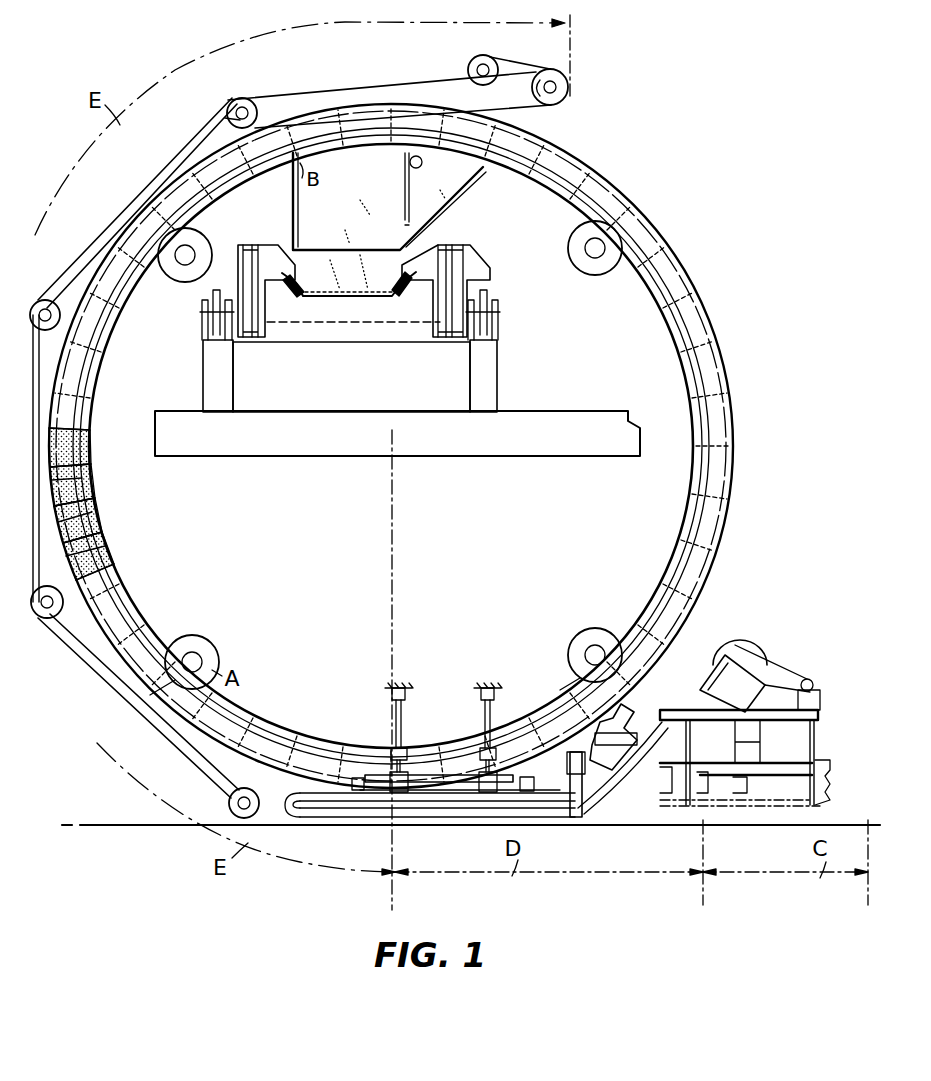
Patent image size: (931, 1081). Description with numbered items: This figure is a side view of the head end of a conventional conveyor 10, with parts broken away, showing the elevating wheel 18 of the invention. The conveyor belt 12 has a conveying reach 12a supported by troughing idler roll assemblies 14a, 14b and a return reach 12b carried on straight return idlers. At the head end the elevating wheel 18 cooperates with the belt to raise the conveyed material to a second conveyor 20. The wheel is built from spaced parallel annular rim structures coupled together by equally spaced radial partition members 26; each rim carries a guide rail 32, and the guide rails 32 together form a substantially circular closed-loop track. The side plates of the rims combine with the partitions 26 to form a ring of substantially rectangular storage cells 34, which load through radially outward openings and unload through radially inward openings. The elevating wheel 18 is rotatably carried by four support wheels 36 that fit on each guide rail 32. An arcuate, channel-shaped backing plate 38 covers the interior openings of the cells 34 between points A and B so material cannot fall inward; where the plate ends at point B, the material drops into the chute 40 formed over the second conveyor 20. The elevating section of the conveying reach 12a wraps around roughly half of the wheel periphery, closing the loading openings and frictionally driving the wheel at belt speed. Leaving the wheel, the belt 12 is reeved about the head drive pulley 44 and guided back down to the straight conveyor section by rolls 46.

The conveyor 10 is at (830, 752).
The conveyor belt 12 is at (780, 797).
The conveying reach 12a is at (770, 775).
The return reach 12b is at (115, 702).
The troughing idler roll assembly 14a is at (740, 805).
The troughing idler roll assembly 14b is at (675, 805).
The elevating wheel 18 is at (697, 272).
The second conveyor 20 is at (428, 258).
The radial partition member 26 is at (94, 482).
The guide rail 32 is at (686, 354).
The storage cell 34 is at (665, 312).
The support wheel 36 is at (190, 283).
The arcuate backing plate 38 is at (86, 442).
The chute 40 is at (293, 215).
The head drive pulley 44 is at (566, 98).
The roll 46 is at (226, 114).